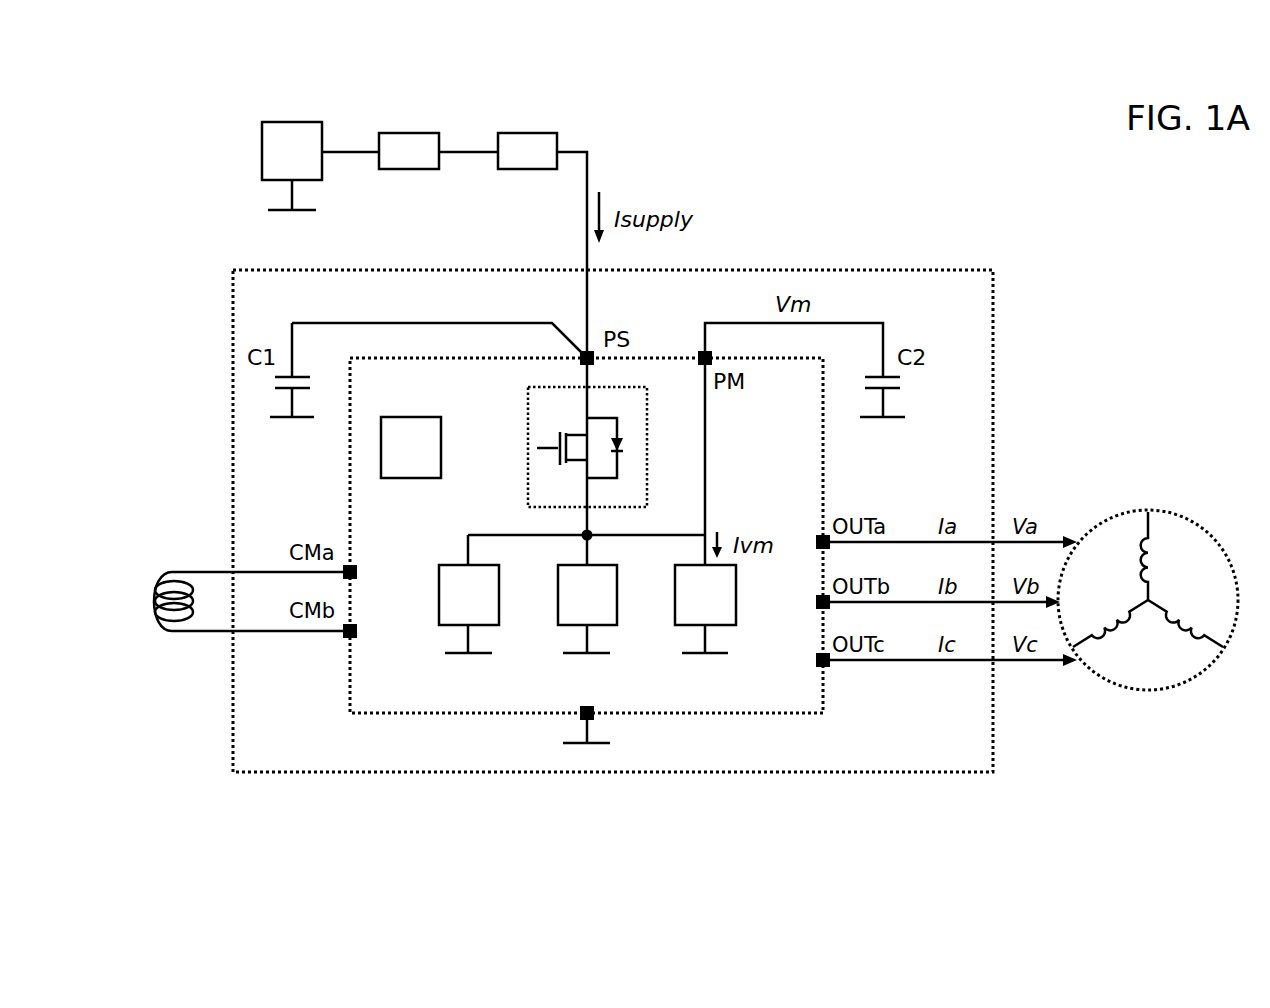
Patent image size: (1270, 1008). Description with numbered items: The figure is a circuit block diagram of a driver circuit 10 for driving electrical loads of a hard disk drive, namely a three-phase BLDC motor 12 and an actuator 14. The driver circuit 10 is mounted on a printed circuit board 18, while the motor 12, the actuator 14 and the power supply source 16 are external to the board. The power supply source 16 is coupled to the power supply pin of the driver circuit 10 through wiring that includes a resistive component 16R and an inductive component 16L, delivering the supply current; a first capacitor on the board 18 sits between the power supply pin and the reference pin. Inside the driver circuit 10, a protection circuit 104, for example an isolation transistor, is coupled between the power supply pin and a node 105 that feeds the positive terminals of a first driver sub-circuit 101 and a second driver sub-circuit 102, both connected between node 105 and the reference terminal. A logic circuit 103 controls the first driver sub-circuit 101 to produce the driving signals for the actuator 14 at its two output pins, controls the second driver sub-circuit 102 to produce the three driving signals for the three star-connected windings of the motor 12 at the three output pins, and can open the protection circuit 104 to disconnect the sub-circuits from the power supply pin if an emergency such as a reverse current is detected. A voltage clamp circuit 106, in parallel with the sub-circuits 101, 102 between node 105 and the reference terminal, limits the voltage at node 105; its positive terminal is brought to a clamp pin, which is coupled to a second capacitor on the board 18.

The driver circuit 10 is at (710, 713).
The three-phase BLDC motor 12 is at (1172, 497).
The actuator 14 is at (133, 594).
The power supply source 16 is at (297, 121).
The resistive component 16R is at (413, 132).
The inductive component 16L is at (532, 132).
The printed circuit board 18 is at (830, 772).
The first driver sub-circuit 101 is at (489, 607).
The second driver sub-circuit 102 is at (607, 607).
The logic circuit 103 is at (431, 459).
The protection circuit 104 is at (528, 442).
The node 105 is at (587, 535).
The voltage clamp circuit 106 is at (725, 607).